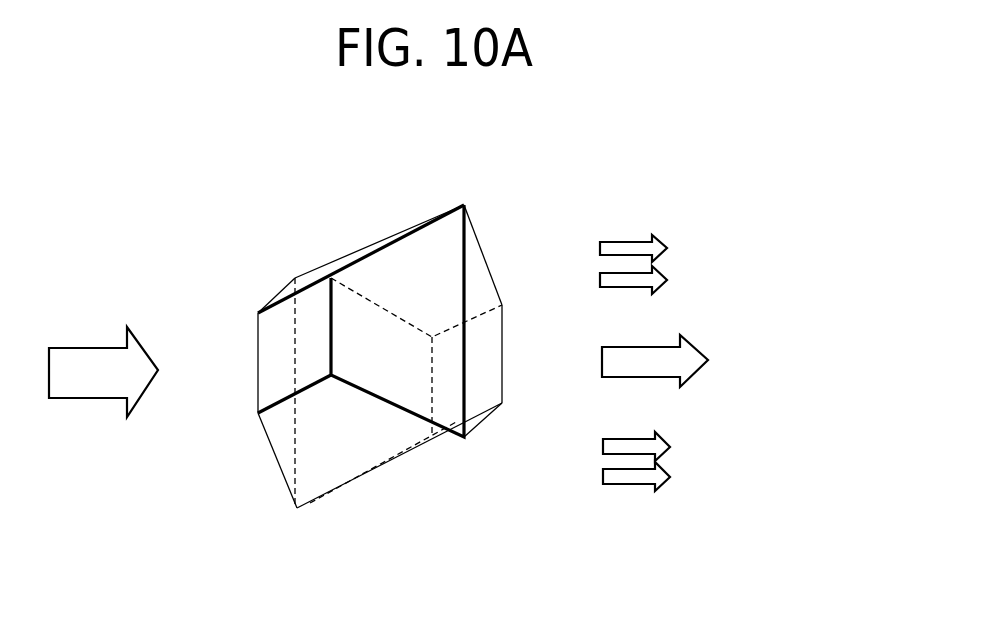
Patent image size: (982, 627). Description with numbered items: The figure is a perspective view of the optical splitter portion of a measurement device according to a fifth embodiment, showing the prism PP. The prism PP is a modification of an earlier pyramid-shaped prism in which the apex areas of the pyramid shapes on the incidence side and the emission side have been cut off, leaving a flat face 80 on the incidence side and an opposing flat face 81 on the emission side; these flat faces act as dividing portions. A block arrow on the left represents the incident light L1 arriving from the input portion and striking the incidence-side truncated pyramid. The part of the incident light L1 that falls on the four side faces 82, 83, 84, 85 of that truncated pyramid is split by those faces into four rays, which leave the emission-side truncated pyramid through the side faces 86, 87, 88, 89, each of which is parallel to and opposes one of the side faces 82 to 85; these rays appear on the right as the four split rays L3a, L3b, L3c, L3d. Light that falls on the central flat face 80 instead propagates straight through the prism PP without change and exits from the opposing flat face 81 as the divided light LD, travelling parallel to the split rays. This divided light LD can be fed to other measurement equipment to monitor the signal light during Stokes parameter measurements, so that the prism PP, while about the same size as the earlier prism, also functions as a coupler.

The prism PP is at (518, 220).
The flat face 80 is at (277, 330).
The flat face 81 is at (483, 366).
The side face 82 is at (270, 372).
The side face 83 is at (377, 297).
The side face 84 is at (320, 278).
The side face 85 is at (328, 468).
The side face 86 is at (483, 340).
The side face 87 is at (365, 442).
The side face 88 is at (443, 443).
The side face 89 is at (476, 230).
The incident light L1 is at (90, 347).
The split ray L3a is at (660, 235).
The split ray L3b is at (660, 267).
The split ray L3c is at (662, 433).
The split ray L3d is at (662, 463).
The divided light LD is at (697, 347).